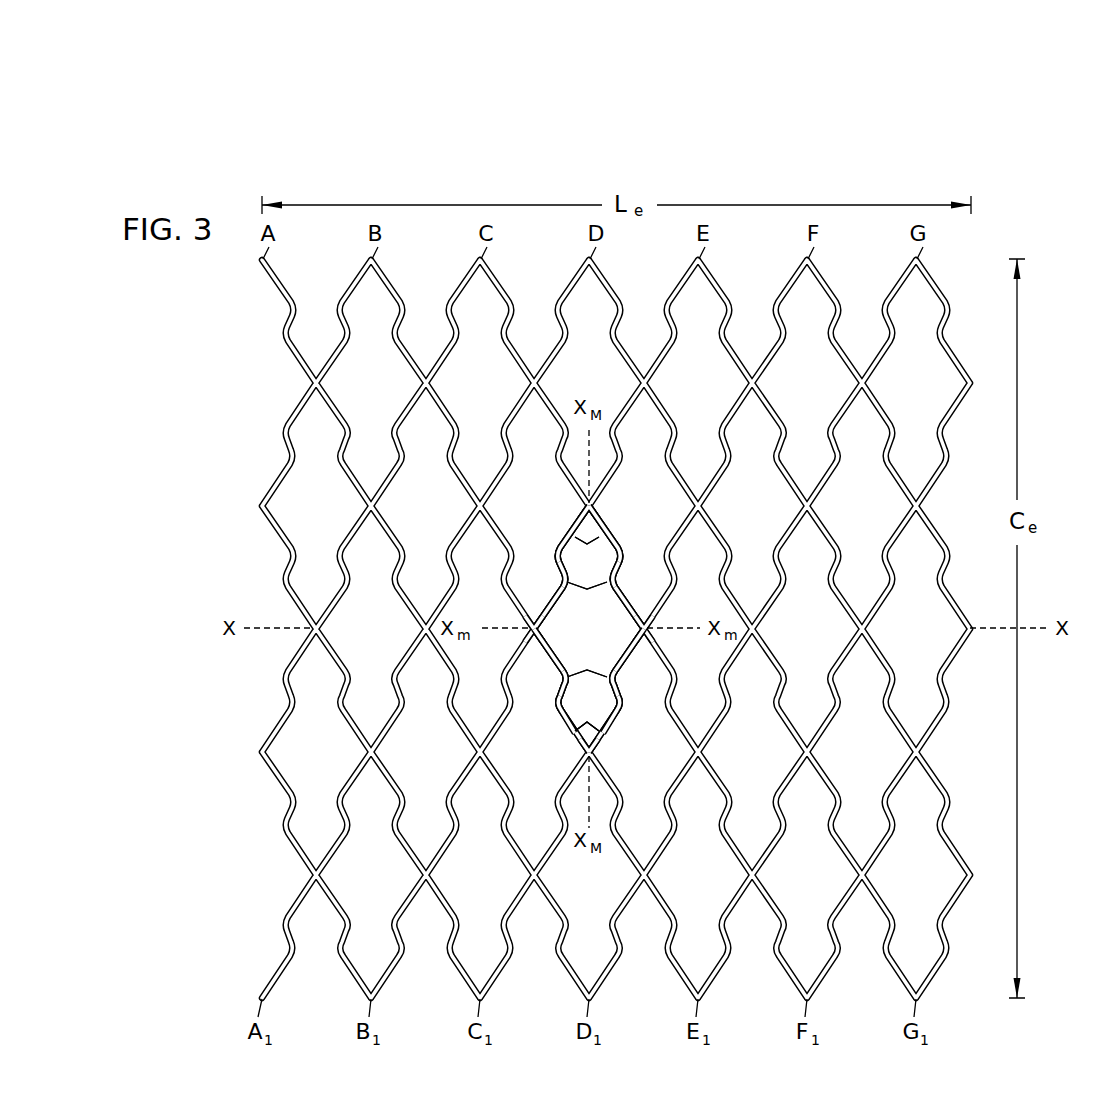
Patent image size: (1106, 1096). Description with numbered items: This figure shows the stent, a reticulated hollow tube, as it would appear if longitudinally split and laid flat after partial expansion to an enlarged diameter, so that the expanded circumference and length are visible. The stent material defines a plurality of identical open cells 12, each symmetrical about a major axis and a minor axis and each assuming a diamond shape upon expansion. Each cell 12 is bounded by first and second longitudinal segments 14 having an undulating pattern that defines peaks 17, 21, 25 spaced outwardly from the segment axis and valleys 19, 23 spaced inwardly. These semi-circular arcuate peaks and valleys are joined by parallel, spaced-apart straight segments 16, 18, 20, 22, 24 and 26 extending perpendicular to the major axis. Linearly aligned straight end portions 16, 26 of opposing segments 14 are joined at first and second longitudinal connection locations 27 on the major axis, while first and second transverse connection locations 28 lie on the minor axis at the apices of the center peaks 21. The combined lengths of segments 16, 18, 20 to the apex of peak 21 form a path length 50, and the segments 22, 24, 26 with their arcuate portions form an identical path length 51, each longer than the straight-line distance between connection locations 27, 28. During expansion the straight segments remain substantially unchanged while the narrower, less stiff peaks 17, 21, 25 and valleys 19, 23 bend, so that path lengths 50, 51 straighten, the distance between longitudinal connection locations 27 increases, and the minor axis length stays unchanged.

The cell 12 is at (600, 648).
The longitudinal segment 14 is at (630, 520).
The straight end portion 16 is at (588, 715).
The peak 17 is at (615, 703).
The straight segment 18 is at (553, 690).
The valley 19 is at (587, 662).
The straight segment 20 is at (549, 652).
The center peak 21 is at (532, 632).
The straight segment 22 is at (555, 606).
The valley 23 is at (587, 597).
The straight segment 24 is at (557, 567).
The peak 25 is at (551, 551).
The straight end portion 26 is at (589, 553).
The longitudinal connection location 27 is at (579, 502).
The transverse connection location 28 is at (533, 618).
The path length 50 is at (575, 733).
The path length 51 is at (587, 544).